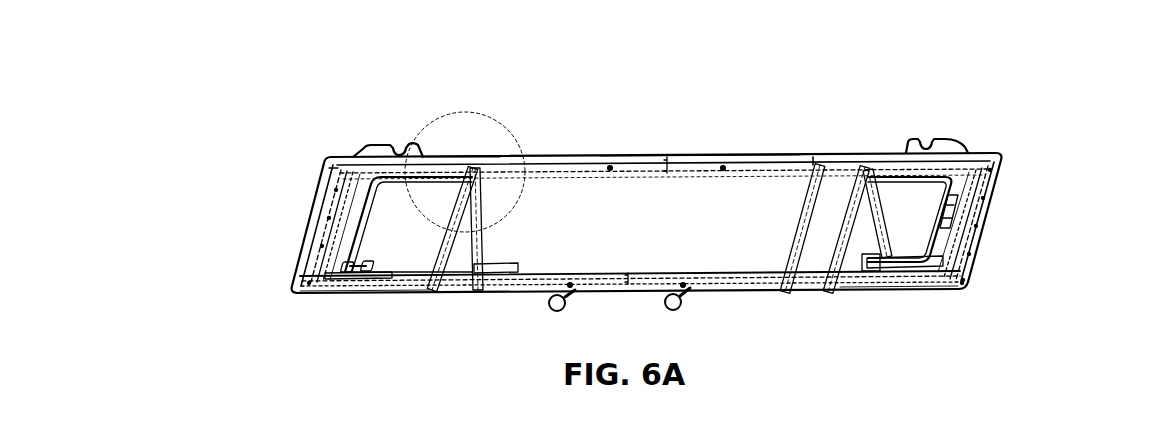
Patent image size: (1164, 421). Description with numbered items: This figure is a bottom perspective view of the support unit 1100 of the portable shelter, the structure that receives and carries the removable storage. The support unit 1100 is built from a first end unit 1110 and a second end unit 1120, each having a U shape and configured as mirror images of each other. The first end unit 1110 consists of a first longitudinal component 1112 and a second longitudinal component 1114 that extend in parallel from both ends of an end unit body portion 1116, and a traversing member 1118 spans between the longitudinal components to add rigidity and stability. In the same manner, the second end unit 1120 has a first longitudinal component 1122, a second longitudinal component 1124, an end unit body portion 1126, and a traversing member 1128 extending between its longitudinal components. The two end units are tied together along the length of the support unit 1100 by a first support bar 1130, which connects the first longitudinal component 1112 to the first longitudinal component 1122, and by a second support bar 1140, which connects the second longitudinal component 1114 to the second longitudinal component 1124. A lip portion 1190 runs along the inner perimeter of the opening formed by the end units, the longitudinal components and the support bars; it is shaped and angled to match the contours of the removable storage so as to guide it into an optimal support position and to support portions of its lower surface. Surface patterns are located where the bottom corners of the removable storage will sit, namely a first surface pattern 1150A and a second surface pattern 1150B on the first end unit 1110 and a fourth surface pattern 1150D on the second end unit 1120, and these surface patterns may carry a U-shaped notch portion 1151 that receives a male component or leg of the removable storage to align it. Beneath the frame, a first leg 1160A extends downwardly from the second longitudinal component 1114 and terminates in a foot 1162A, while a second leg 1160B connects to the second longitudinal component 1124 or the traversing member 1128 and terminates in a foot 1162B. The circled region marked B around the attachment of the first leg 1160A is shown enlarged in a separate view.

The support unit 1100 is at (1014, 147).
The first end unit 1110 is at (325, 160).
The first longitudinal component 1112 is at (413, 287).
The second longitudinal component 1114 is at (487, 160).
The end unit body portion 1116 is at (317, 190).
The traversing member 1118 is at (438, 245).
The second end unit 1120 is at (963, 287).
The first longitudinal component 1122 is at (880, 286).
The second longitudinal component 1124 is at (852, 160).
The end unit body portion 1126 is at (973, 217).
The traversing member 1128 is at (793, 238).
The first support bar 1130 is at (540, 283).
The second support bar 1140 is at (730, 155).
The first surface pattern 1150A is at (357, 275).
The second surface pattern 1150B is at (378, 152).
The fourth surface pattern 1150D is at (950, 146).
The notch portion 1151 is at (400, 148).
The first leg 1160A is at (482, 232).
The second leg 1160B is at (883, 217).
The foot 1162A is at (497, 268).
The foot 1162B is at (958, 257).
The lip portion 1190 is at (343, 262).
The section B is at (453, 112).